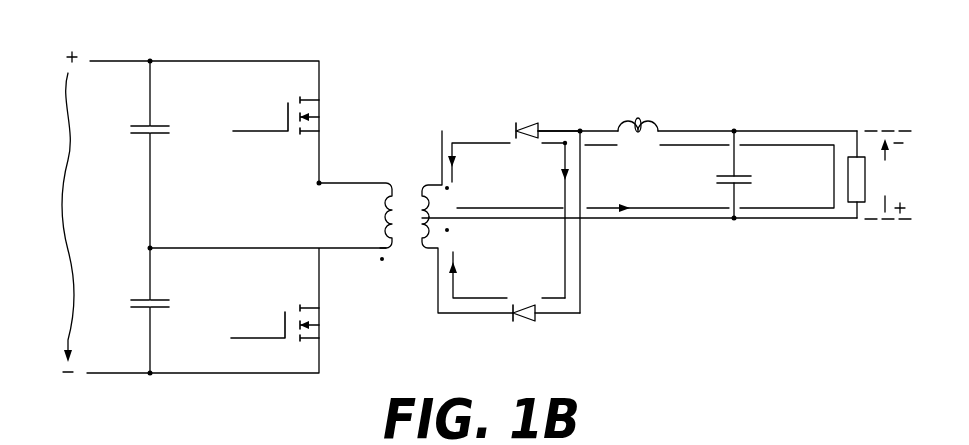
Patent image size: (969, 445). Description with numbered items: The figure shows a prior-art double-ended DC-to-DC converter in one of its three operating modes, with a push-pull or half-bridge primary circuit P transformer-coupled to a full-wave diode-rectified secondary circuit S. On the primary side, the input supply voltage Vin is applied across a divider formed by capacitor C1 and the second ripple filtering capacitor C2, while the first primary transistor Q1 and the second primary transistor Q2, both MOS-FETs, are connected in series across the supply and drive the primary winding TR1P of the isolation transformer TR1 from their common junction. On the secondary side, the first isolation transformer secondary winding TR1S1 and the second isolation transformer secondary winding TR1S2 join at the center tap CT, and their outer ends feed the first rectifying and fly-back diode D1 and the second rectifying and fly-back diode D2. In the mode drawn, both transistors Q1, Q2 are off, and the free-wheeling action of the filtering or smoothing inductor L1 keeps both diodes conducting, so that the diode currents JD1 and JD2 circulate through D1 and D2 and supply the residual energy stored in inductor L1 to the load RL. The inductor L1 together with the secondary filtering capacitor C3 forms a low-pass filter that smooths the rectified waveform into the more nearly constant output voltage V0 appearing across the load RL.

The primary side circuit P is at (173, 51).
The secondary side circuit S is at (686, 103).
The input supply voltage Vin is at (73, 212).
The capacitor C1 is at (147, 123).
The second ripple filtering capacitor C2 is at (147, 299).
The first primary transistor Q1 is at (286, 111).
The second primary transistor Q2 is at (285, 318).
The isolation transformer TR1 is at (588, 222).
The primary winding TR1P is at (370, 256).
The first isolation transformer secondary winding TR1S1 is at (432, 179).
The second isolation transformer secondary winding TR1S2 is at (425, 256).
The center tap CT is at (488, 218).
The first rectifying and fly-back diode D1 is at (537, 122).
The second rectifying and fly-back diode D2 is at (533, 303).
The current through first diode JD1 is at (508, 219).
The current through second diode JD2 is at (507, 275).
The filtering or smoothing inductor L1 is at (620, 120).
The secondary filtering capacitor C3 is at (720, 176).
The load RL is at (848, 186).
The output voltage V0 is at (888, 175).